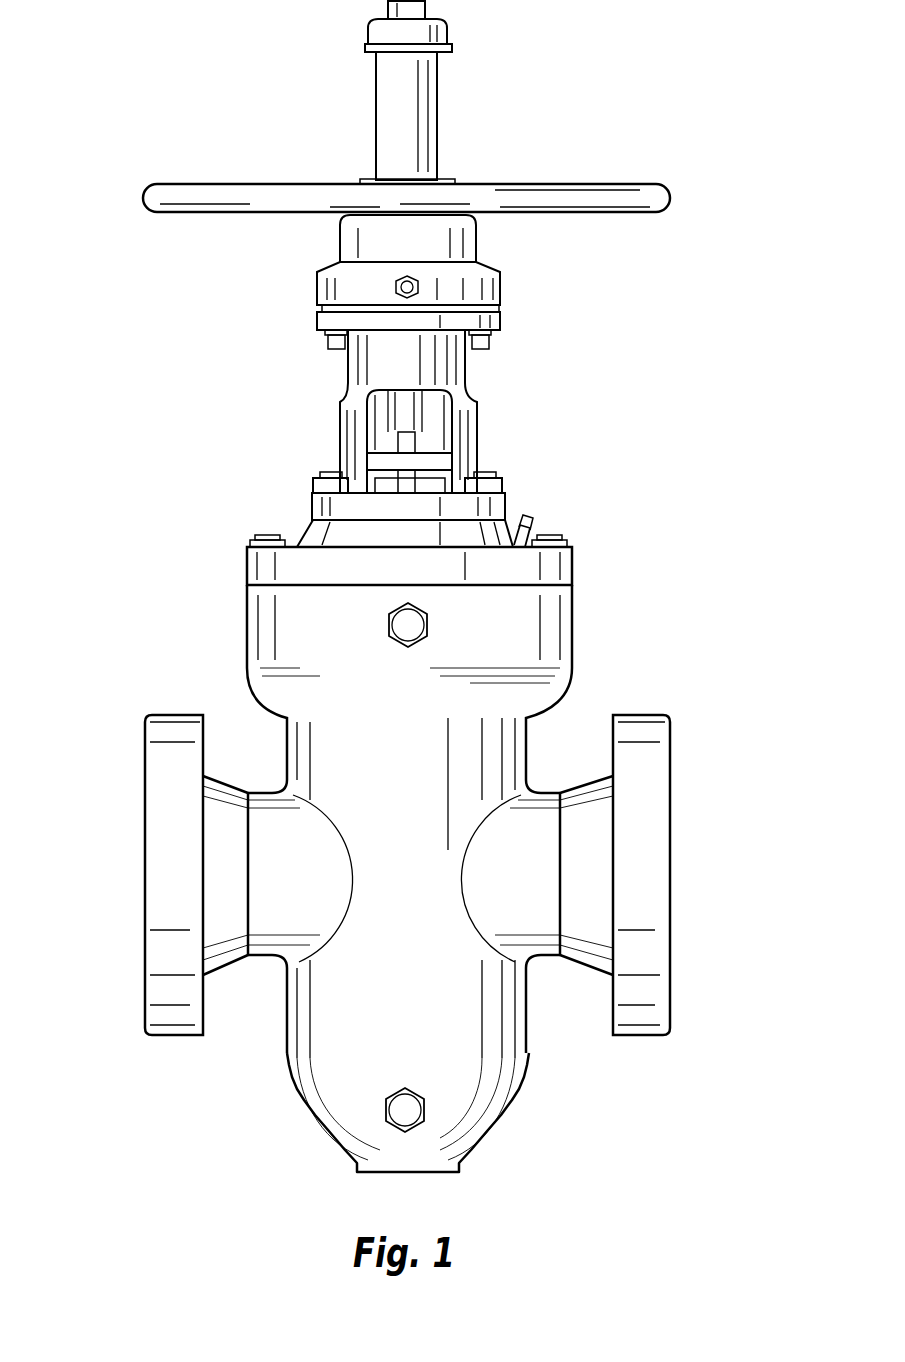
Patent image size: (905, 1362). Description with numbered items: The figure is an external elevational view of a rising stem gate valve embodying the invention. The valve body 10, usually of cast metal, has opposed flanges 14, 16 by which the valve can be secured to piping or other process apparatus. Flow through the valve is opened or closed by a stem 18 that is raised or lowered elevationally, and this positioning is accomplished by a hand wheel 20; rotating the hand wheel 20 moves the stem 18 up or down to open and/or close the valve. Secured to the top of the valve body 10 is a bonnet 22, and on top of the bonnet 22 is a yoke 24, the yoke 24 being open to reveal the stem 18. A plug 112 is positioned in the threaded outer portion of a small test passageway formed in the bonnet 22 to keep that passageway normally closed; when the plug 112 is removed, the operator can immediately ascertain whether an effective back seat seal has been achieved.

The valve body 10 is at (480, 762).
The flange 14 is at (167, 860).
The flange 16 is at (640, 875).
The stem 18 is at (400, 420).
The hand wheel 20 is at (593, 198).
The bonnet 22 is at (547, 565).
The yoke 24 is at (460, 402).
The plug 112 is at (530, 523).